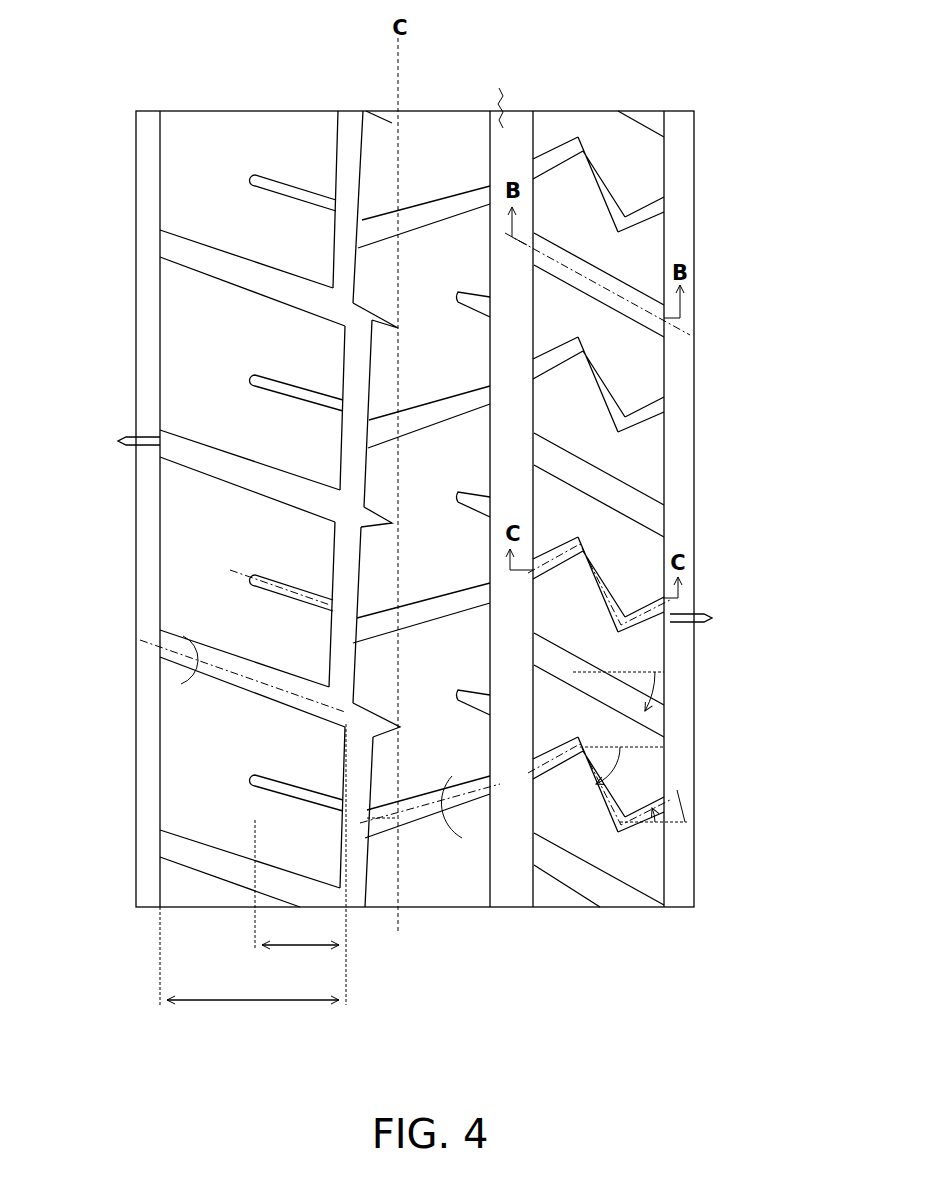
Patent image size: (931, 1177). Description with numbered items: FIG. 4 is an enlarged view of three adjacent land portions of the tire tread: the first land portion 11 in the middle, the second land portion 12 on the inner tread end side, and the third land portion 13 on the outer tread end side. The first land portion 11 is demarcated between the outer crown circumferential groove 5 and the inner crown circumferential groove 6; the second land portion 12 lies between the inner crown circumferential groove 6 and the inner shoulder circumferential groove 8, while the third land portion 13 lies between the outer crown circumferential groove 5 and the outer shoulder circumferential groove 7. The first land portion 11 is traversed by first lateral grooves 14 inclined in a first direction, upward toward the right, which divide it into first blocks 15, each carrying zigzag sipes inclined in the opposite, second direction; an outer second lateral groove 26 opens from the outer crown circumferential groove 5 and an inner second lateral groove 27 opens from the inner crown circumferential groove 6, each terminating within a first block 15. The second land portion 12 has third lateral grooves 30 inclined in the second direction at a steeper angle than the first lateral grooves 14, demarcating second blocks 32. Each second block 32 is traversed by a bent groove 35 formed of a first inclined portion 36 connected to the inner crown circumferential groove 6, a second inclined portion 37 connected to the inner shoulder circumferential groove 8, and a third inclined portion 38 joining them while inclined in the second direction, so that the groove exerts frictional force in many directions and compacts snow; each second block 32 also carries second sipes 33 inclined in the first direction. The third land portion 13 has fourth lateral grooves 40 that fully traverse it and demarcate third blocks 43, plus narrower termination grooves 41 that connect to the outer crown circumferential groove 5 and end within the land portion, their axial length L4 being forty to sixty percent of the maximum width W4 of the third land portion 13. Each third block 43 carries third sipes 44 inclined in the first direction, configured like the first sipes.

The outer crown circumferential groove 5 is at (350, 147).
The inner crown circumferential groove 6 is at (516, 148).
The outer shoulder circumferential groove 7 is at (148, 140).
The inner shoulder circumferential groove 8 is at (681, 140).
The first land portion 11 is at (438, 140).
The second land portion 12 is at (598, 143).
The third land portion 13 is at (226, 140).
The first lateral groove 14 is at (588, 466).
The first block 15 is at (415, 152).
The outer second lateral groove 26 is at (277, 588).
The inner second lateral groove 27 is at (473, 505).
The third lateral groove 30 is at (585, 272).
The second block 32 is at (617, 180).
The second sipe 33 is at (642, 452).
The bent groove 35 is at (670, 552).
The first inclined portion 36 is at (560, 348).
The second inclined portion 37 is at (758, 305).
The third inclined portion 38 is at (597, 378).
The fourth lateral groove 40 is at (215, 262).
The termination groove 41 is at (287, 393).
The third block 43 is at (222, 170).
The third sipe 44 is at (298, 193).
The length of the termination groove L4 is at (253, 864).
The maximum width of the third land portion W4 is at (253, 1015).